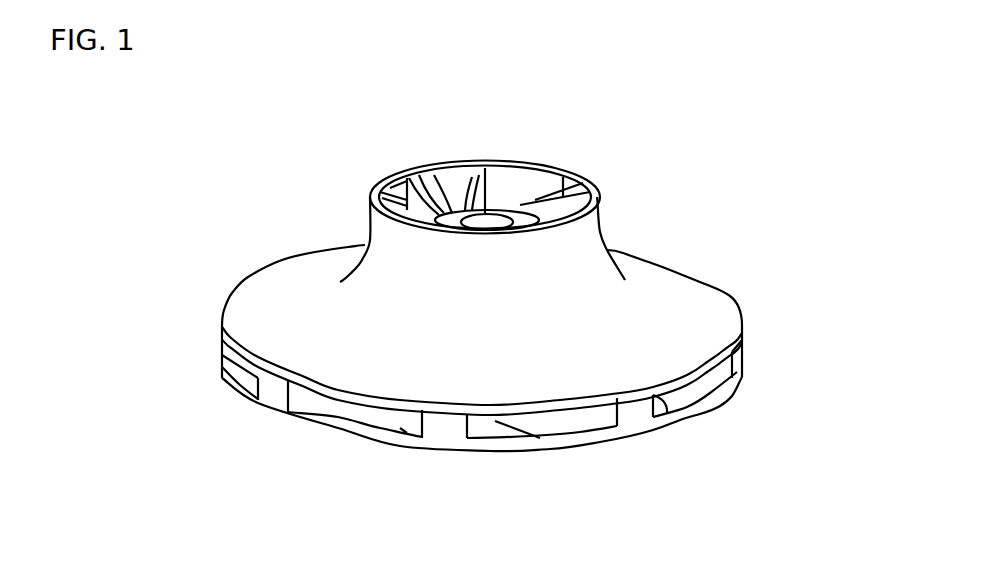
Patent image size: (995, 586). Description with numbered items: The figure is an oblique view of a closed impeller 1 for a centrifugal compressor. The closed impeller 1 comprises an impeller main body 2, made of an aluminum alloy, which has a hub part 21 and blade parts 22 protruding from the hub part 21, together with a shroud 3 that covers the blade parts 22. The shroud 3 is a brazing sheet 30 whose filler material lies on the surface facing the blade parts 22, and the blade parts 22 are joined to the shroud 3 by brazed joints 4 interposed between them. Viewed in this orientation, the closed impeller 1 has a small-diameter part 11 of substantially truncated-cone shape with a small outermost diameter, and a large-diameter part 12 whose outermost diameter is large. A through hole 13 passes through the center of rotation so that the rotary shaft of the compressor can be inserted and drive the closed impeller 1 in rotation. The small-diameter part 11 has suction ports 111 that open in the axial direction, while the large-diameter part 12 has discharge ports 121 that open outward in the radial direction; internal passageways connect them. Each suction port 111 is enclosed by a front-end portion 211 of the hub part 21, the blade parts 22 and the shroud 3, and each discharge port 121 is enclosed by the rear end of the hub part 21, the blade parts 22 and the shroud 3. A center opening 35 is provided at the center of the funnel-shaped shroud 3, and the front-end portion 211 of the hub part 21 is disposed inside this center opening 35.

The closed impeller 1 is at (740, 131).
The shroud 3 is at (690, 306).
The brazing sheet 30 is at (517, 306).
The small-diameter part 11 is at (592, 234).
The suction ports 111 is at (448, 180).
The through hole 13 is at (475, 162).
The brazed joint 4 is at (486, 132).
The center opening 35 is at (493, 187).
The large-diameter part 12 is at (517, 439).
The discharge ports 121 is at (700, 388).
The impeller main body 2 is at (486, 344).
The hub part 21 is at (587, 438).
The blade parts 22 is at (372, 180).
The front-end portion 211 is at (420, 177).